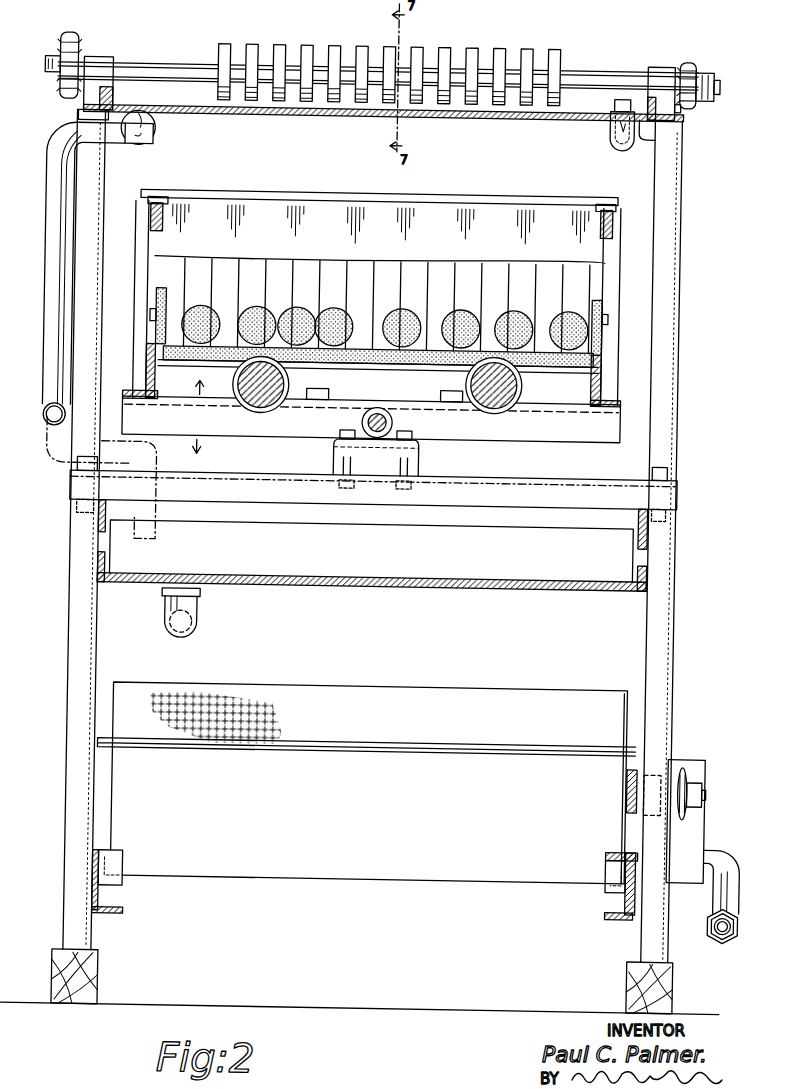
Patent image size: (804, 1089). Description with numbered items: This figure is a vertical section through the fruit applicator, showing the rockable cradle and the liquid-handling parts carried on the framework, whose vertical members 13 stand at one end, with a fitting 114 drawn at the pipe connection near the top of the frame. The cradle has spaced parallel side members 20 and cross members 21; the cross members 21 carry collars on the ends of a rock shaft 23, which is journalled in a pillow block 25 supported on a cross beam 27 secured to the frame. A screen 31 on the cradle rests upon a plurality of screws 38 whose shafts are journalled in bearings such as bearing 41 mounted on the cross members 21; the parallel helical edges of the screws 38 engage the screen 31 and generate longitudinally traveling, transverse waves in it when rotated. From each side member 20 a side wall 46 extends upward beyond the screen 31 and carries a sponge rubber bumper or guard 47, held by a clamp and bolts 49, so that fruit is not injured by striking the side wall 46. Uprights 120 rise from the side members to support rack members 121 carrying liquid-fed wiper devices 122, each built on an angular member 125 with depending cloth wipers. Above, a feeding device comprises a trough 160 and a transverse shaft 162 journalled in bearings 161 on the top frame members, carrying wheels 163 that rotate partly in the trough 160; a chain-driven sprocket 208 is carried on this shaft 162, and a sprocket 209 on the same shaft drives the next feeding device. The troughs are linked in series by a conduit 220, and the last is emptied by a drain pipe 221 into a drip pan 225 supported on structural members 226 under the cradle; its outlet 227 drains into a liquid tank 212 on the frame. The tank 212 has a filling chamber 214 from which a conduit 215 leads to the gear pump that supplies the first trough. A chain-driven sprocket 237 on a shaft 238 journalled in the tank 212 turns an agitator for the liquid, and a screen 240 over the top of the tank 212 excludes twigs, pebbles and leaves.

The vertical members 13 is at (80, 233).
The side members 20 is at (147, 384).
The cross members 21 is at (606, 421).
The rock shaft 23 is at (342, 430).
The pillow block 25 is at (402, 440).
The cross beam 27 is at (499, 489).
The screen 31 is at (374, 360).
The screws 38 is at (282, 382).
The bearing 41 is at (308, 398).
The side wall 46 is at (154, 347).
The bumper or guard 47 is at (156, 309).
The bolts 49 is at (148, 320).
The pipe clamps 114 is at (98, 122).
The uprights 120 is at (136, 276).
The rack members 121 is at (162, 206).
The liquid-fed wiper devices 122 is at (373, 268).
The angular member 125 is at (475, 199).
The trough 160 is at (441, 117).
The bearings 161 is at (87, 65).
The shaft 162 is at (577, 72).
The wheels 163 is at (489, 47).
The sprocket 208 is at (67, 50).
The sprocket 209 is at (684, 60).
The liquid tank 212 is at (154, 794).
The filling chamber 214 is at (707, 760).
The conduit 215 is at (721, 895).
The conduit 220 is at (598, 147).
The drain pipe 221 is at (153, 141).
The drip pan 225 is at (346, 600).
The structural members 226 is at (100, 568).
The outlet 227 is at (201, 628).
The sprocket 237 is at (695, 815).
The shaft 238 is at (664, 811).
The screen 240 is at (291, 709).